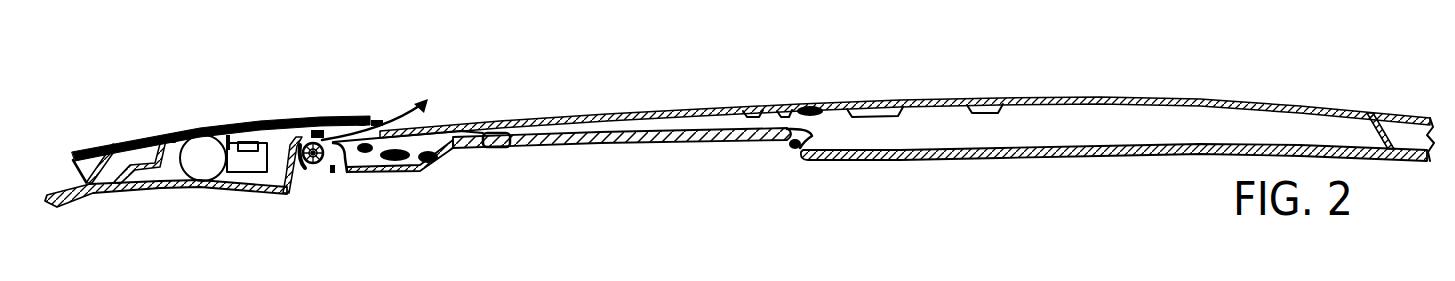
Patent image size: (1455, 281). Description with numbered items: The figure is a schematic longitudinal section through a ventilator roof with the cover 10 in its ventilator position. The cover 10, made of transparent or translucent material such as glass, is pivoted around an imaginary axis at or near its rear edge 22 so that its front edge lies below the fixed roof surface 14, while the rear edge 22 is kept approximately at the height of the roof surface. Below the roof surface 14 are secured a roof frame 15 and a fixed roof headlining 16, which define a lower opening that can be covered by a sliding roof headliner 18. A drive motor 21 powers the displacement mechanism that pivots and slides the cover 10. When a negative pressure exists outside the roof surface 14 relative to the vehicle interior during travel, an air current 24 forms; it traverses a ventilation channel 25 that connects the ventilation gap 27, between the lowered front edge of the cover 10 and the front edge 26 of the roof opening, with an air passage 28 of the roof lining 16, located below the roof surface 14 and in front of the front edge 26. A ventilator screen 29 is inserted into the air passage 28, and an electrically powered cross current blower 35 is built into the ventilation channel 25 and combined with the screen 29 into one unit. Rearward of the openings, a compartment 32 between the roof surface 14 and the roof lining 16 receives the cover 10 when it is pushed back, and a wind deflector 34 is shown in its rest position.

The cover 10 is at (615, 112).
The fixed roof surface 14 is at (98, 142).
The roof frame 15 is at (1000, 158).
The fixed roof headlining 16 is at (157, 188).
The sliding roof headliner 18 is at (621, 148).
The drive motor 21 is at (203, 163).
The rear edge of cover 22 is at (793, 104).
The air current 24 is at (405, 95).
The ventilation channel 25 is at (318, 135).
The front edge of roof opening 26 is at (362, 122).
The ventilation gap 27 is at (377, 123).
The air passage 28 is at (337, 173).
The ventilator screen 29 is at (317, 177).
The compartment 32 is at (1088, 113).
The wind deflector 34 is at (393, 175).
The cross current blower 35 is at (288, 122).